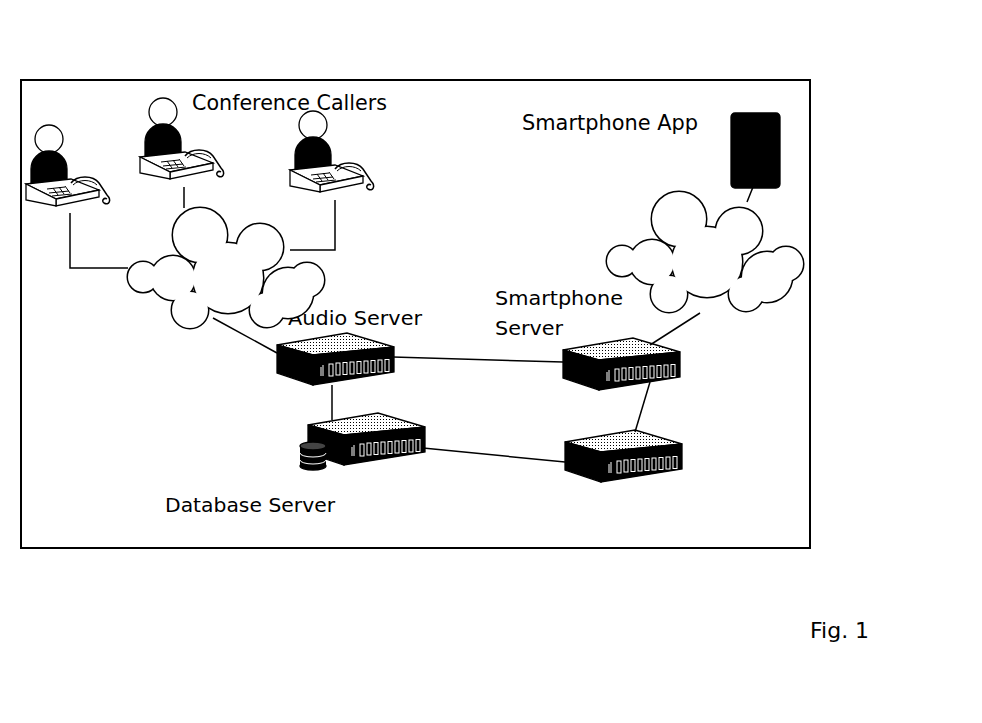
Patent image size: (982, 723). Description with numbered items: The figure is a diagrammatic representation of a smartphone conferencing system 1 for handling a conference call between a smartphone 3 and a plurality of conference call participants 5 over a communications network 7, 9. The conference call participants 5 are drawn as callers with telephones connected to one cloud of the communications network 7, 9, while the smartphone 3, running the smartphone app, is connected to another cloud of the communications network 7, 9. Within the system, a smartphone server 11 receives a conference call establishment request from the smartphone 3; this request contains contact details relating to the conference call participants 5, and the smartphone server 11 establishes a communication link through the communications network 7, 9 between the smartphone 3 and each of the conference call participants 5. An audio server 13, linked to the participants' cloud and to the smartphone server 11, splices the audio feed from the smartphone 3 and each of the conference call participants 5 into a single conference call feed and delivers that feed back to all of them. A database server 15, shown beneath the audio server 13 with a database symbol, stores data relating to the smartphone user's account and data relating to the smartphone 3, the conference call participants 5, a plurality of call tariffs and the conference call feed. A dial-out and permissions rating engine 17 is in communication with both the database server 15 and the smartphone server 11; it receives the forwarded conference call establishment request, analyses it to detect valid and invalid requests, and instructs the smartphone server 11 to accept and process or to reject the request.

The smartphone conferencing system 1 is at (472, 578).
The smartphone 3 is at (748, 143).
The conference call participants 5 is at (48, 125).
The communications network 7 is at (718, 253).
The communications network 9 is at (207, 285).
The smartphone server 11 is at (680, 352).
The audio server 13 is at (277, 373).
The database server 15 is at (402, 460).
The dial-out and permissions rating engine (DPRE) 17 is at (680, 448).